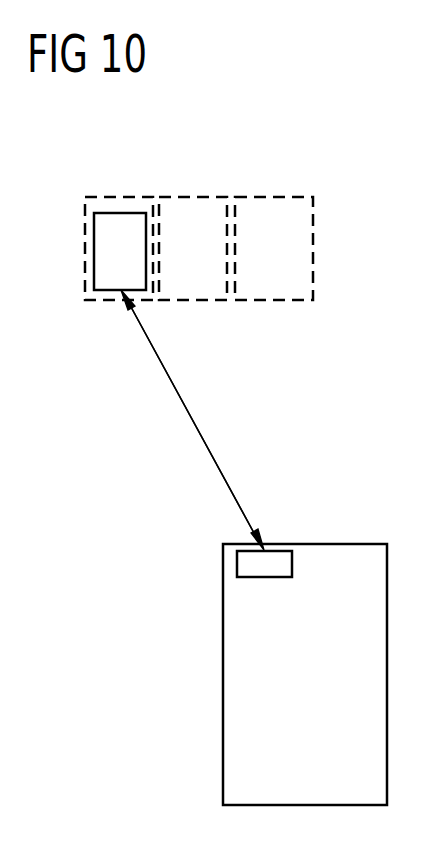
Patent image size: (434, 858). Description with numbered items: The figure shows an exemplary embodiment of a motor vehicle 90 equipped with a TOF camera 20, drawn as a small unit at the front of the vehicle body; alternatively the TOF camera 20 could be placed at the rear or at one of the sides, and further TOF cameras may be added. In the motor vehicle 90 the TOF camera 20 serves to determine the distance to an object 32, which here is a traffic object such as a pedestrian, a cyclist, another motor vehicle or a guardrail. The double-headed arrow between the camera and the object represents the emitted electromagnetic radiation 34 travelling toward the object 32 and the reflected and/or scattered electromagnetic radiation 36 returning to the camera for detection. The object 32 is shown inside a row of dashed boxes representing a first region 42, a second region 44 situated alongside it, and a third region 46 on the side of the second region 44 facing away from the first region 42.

The TOF camera 20 is at (237, 562).
The object 32 is at (93, 250).
The electromagnetic radiation 34 is at (190, 412).
The reflected and/or scattered electromagnetic radiation 36 is at (192, 420).
The first region 42 is at (273, 197).
The second region 44 is at (197, 197).
The third region 46 is at (108, 197).
The motor vehicle 90 is at (223, 685).